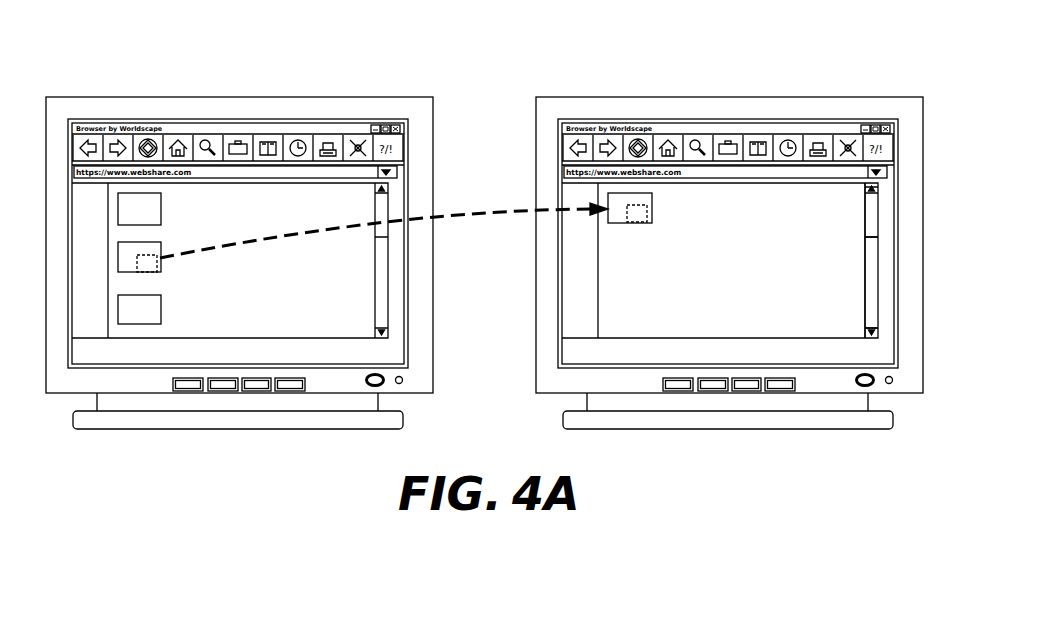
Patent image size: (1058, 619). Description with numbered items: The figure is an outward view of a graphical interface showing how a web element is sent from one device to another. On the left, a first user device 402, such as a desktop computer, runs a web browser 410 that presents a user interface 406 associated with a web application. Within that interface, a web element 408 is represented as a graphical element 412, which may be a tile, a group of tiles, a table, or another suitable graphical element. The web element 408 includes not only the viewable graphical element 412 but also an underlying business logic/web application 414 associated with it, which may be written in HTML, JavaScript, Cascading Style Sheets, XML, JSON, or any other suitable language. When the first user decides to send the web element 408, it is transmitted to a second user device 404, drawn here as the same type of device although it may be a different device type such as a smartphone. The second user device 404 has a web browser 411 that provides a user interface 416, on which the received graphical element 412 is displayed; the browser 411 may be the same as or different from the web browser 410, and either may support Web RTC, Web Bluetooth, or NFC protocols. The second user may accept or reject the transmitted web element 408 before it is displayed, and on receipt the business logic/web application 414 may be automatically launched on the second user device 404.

The first user device 402 is at (92, 97).
The second user device 404 is at (921, 120).
The user interface 406 is at (108, 202).
The web element 408 is at (118, 262).
The web browser 410 is at (105, 120).
The web browser 411 is at (595, 120).
The graphical element 412 is at (157, 242).
The business logic/web application 414 is at (148, 272).
The user interface 416 is at (876, 272).